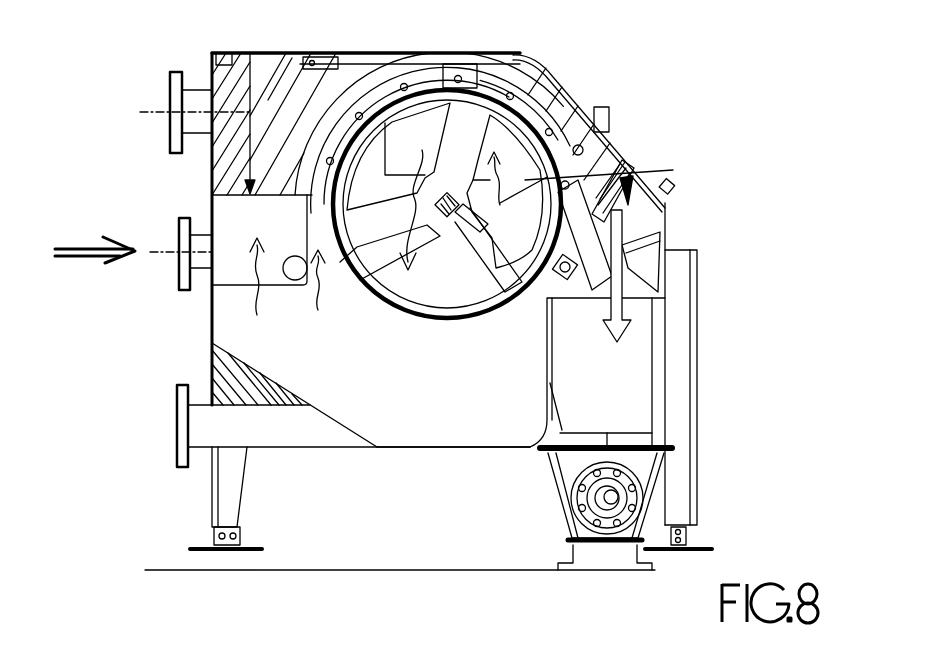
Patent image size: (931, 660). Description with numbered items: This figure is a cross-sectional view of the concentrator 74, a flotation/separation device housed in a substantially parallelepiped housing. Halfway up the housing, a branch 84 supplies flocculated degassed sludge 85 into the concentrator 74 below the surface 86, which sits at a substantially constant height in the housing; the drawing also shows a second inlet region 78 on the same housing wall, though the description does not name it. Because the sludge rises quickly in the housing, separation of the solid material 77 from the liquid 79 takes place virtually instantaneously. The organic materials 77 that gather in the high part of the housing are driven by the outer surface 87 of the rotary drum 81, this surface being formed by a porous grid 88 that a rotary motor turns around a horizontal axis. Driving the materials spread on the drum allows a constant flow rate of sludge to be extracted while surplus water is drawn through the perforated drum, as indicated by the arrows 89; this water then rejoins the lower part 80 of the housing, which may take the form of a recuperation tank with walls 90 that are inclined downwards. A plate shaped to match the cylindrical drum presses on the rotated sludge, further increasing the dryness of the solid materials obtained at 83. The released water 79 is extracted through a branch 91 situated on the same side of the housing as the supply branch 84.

The concentrator 74 is at (685, 112).
The solid material 77 is at (297, 142).
The second inlet 78 is at (250, 302).
The liquid 79 is at (372, 365).
The lower part of the housing 80 is at (430, 464).
The rotary drum 81 is at (470, 110).
The solid materials obtained 83 is at (667, 307).
The branch for supply with flocculated degassed sludge 84 is at (200, 232).
The flocculated degassed sludge 85 is at (80, 245).
The surface 86 is at (242, 50).
The outer surface of the rotary drum 87 is at (537, 57).
The porous grid 88 is at (574, 97).
The arrows 89 is at (650, 176).
The walls 90 is at (212, 365).
The branch 91 is at (188, 432).